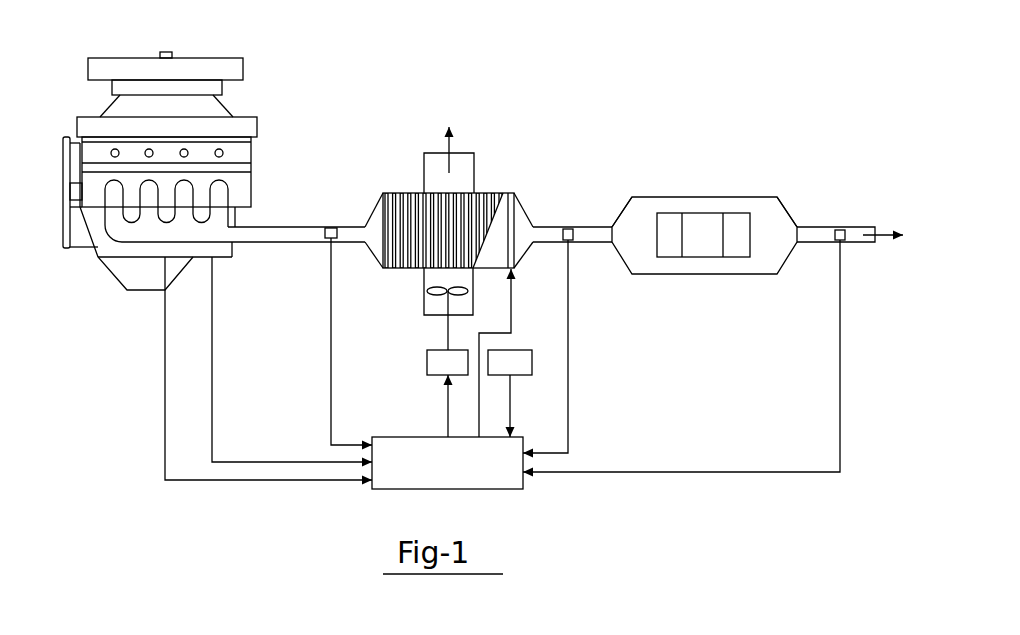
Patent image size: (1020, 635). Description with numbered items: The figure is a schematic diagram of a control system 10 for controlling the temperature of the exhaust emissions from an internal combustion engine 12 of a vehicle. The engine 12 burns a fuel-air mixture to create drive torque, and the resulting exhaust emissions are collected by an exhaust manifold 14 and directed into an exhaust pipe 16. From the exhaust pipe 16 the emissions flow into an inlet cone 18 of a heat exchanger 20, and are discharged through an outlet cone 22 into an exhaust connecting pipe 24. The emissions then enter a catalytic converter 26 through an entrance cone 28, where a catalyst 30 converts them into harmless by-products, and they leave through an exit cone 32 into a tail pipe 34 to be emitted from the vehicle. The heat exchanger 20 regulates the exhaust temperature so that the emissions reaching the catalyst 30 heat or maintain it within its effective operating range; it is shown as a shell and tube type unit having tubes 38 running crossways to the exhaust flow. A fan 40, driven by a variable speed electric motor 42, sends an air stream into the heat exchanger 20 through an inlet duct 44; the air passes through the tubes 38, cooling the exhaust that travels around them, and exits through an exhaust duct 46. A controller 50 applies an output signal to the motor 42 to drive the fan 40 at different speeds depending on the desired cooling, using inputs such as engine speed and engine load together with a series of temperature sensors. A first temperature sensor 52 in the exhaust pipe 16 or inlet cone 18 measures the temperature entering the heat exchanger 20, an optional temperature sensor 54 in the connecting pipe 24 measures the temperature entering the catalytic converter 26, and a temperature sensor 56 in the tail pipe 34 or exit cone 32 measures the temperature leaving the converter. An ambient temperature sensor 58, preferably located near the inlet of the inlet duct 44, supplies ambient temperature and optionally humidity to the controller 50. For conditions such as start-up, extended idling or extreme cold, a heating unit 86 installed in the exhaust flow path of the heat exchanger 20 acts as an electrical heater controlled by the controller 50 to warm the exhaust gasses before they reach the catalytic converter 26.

The control system 10 is at (557, 125).
The internal combustion engine 12 is at (258, 113).
The exhaust manifold 14 is at (98, 245).
The exhaust pipe 16 is at (300, 243).
The inlet cone 18 is at (373, 247).
The heat exchanger 20 is at (441, 193).
The outlet cone 22 is at (527, 208).
The exhaust connecting pipe 24 is at (580, 243).
The catalytic converter 26 is at (732, 230).
The entrance cone 28 is at (620, 210).
The catalyst 30 is at (707, 257).
The exit cone 32 is at (788, 210).
The tail pipe 34 is at (865, 245).
The tubes 38 is at (383, 220).
The fan 40 is at (428, 290).
The variable speed electric motor 42 is at (427, 362).
The inlet duct 44 is at (425, 297).
The exhaust duct 46 is at (424, 170).
The controller 50 is at (483, 489).
The first temperature sensor 52 is at (327, 228).
The temperature sensor 54 is at (555, 242).
The temperature sensor 56 is at (830, 237).
The ambient temperature sensor 58 is at (510, 348).
The heating unit 86 is at (514, 232).